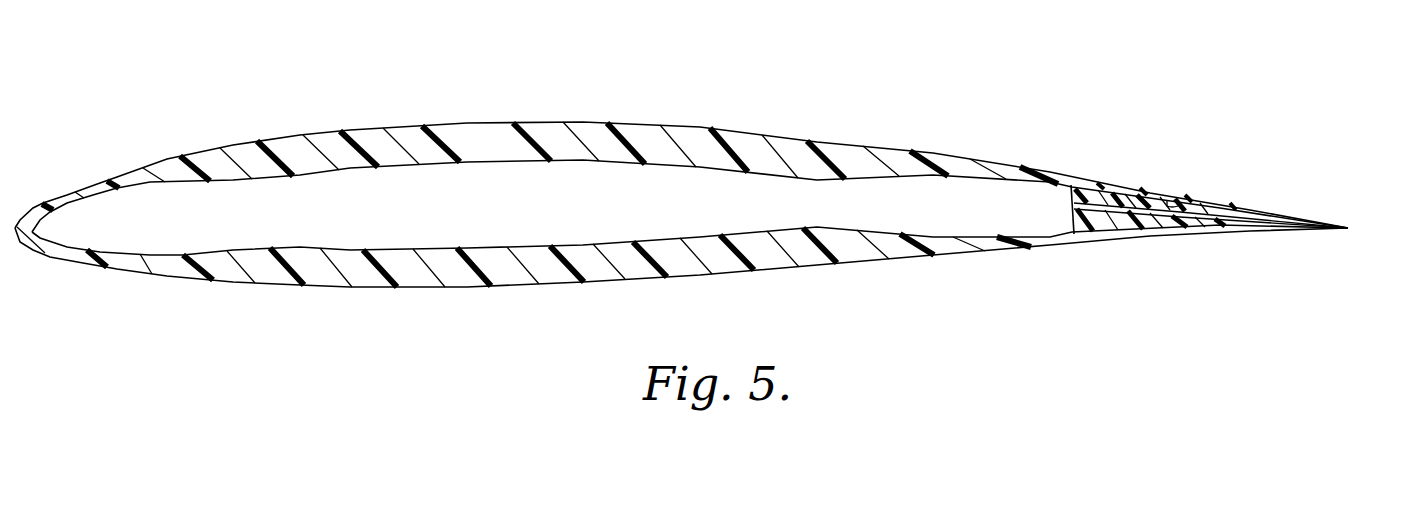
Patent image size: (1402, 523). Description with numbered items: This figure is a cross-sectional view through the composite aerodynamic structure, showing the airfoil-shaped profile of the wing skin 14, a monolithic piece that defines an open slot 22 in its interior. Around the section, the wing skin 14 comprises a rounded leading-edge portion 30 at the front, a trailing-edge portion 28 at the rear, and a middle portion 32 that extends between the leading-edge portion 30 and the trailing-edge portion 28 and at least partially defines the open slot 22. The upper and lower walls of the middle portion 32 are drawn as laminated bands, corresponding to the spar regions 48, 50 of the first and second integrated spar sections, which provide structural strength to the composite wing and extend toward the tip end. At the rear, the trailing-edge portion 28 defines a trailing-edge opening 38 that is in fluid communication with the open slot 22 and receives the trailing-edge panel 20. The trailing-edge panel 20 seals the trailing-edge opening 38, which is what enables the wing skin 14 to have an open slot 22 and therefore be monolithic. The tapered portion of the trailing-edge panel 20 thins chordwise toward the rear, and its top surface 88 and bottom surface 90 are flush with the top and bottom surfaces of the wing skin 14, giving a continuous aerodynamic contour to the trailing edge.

The wing skin 14 is at (248, 100).
The trailing-edge panel 20 is at (1306, 210).
The open slot 22 is at (647, 203).
The trailing-edge portion 28 is at (1084, 180).
The leading-edge portion 30 is at (54, 188).
The middle portion 32 is at (537, 124).
The trailing-edge opening 38 is at (1189, 202).
The spar region 48 is at (456, 137).
The spar region 50 is at (425, 273).
The top surface 88 is at (1240, 207).
The bottom surface 90 is at (1227, 228).